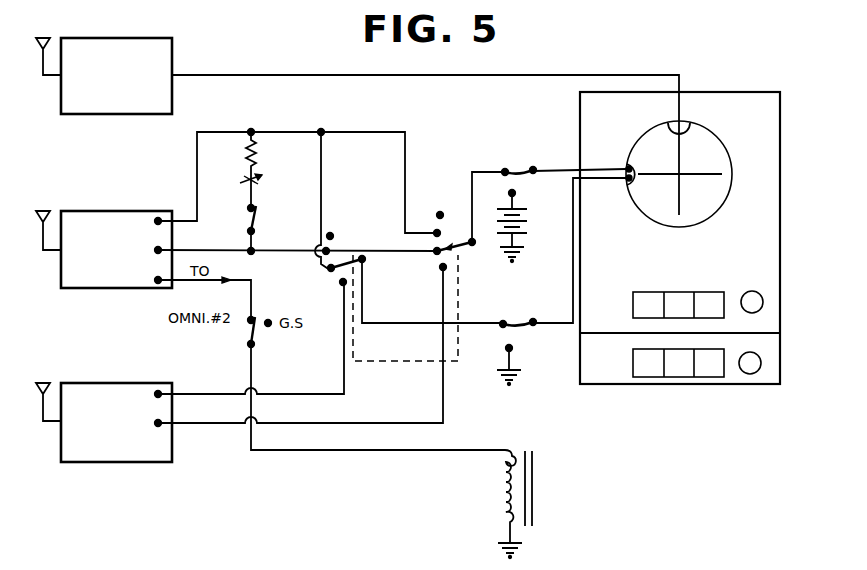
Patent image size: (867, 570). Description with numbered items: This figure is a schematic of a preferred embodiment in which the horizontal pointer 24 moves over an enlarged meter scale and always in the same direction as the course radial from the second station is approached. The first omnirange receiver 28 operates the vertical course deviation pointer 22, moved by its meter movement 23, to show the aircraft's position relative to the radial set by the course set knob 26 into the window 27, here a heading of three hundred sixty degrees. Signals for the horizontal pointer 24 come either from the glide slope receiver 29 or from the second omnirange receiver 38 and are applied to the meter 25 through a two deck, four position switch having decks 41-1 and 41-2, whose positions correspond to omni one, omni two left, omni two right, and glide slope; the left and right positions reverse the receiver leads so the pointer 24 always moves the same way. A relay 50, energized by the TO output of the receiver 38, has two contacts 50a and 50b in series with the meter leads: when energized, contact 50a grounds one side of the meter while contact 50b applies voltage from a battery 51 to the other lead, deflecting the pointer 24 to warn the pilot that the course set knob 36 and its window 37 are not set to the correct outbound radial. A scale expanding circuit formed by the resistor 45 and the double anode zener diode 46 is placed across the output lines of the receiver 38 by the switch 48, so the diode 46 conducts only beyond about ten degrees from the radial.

The first omnirange receiver 28 is at (172, 44).
The second omnirange receiver 38 is at (140, 211).
The glide slope receiver 29 is at (150, 383).
The resistor 45 is at (258, 152).
The double anode zener diode 46 is at (260, 178).
The switch 48 is at (258, 218).
The switch deck 41-1 is at (350, 238).
The switch deck 41-2 is at (430, 213).
The relay contact 50b is at (530, 176).
The battery 51 is at (530, 214).
The relay contact 50a is at (516, 328).
The relay 50 is at (534, 481).
The course deviation pointer 22 is at (676, 197).
The meter movement 23 is at (690, 128).
The glide slope meter 25 is at (632, 163).
The glide slope pointer 24 is at (690, 176).
The window 27 is at (633, 295).
The course set knob 26 is at (764, 300).
The window 37 is at (633, 360).
The course set knob 36 is at (762, 363).